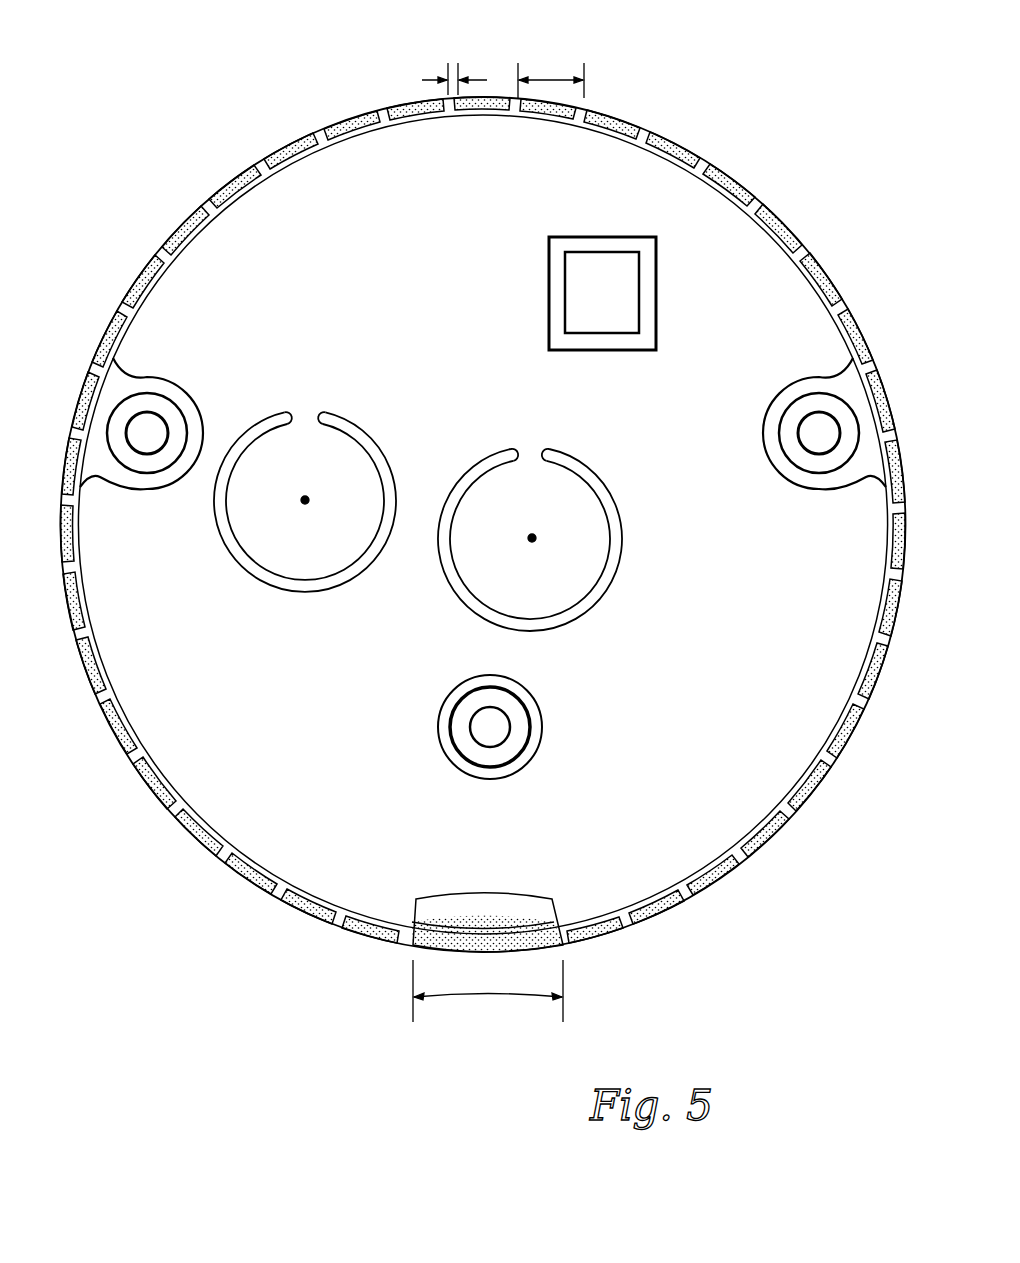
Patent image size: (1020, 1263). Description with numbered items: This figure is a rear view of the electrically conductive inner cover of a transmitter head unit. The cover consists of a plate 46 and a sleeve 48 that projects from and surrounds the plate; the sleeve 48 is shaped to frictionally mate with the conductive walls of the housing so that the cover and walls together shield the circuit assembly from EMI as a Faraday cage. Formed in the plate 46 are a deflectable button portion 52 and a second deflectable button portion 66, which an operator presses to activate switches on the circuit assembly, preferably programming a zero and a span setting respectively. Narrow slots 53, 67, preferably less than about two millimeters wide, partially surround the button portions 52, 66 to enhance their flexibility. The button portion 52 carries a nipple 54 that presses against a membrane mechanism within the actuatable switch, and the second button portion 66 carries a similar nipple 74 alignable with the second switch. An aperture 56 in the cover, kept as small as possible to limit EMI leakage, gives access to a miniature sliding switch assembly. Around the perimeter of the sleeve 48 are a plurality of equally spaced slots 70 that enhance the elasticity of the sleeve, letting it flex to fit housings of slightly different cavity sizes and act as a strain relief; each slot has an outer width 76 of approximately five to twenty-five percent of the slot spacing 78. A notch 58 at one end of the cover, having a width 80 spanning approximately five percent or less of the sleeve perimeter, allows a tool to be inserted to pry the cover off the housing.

The plate 46 is at (738, 260).
The sleeve 48 is at (723, 883).
The deflectable button portion 52 is at (587, 565).
The narrow slot 53 is at (573, 613).
The nipple 54 is at (532, 534).
The aperture 56 is at (622, 278).
The notch 58 is at (528, 940).
The second deflectable button portion 66 is at (250, 537).
The narrow slot 67 is at (270, 578).
The slots 70 is at (322, 124).
The nipple 74 is at (305, 496).
The outer width 76 is at (434, 80).
The slot spacing 78 is at (557, 82).
The width 80 is at (476, 1000).